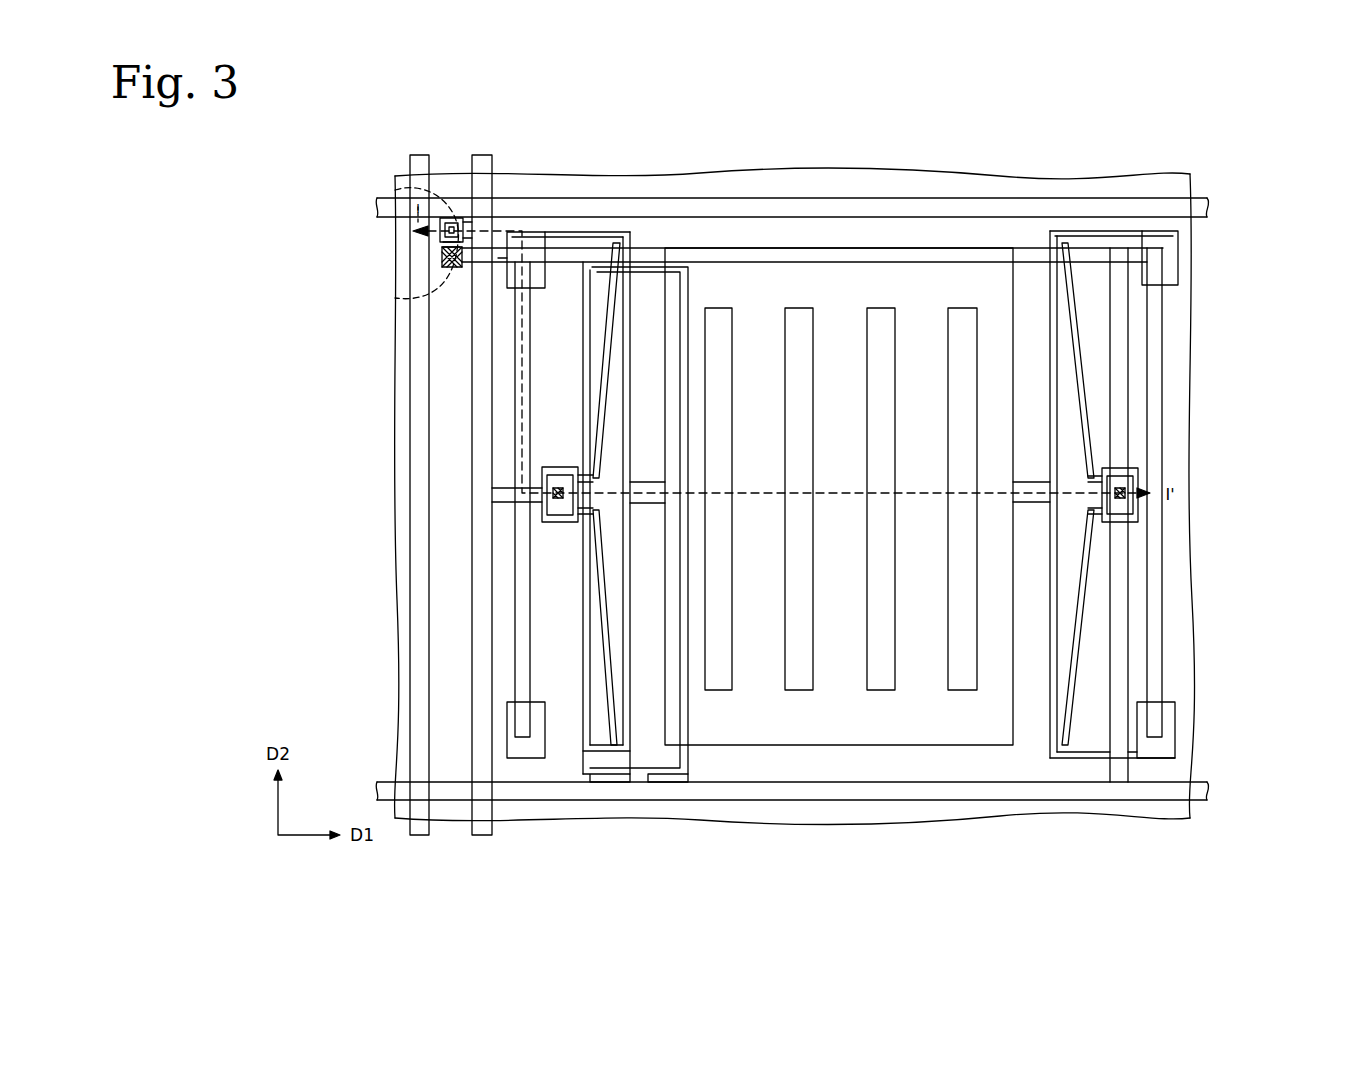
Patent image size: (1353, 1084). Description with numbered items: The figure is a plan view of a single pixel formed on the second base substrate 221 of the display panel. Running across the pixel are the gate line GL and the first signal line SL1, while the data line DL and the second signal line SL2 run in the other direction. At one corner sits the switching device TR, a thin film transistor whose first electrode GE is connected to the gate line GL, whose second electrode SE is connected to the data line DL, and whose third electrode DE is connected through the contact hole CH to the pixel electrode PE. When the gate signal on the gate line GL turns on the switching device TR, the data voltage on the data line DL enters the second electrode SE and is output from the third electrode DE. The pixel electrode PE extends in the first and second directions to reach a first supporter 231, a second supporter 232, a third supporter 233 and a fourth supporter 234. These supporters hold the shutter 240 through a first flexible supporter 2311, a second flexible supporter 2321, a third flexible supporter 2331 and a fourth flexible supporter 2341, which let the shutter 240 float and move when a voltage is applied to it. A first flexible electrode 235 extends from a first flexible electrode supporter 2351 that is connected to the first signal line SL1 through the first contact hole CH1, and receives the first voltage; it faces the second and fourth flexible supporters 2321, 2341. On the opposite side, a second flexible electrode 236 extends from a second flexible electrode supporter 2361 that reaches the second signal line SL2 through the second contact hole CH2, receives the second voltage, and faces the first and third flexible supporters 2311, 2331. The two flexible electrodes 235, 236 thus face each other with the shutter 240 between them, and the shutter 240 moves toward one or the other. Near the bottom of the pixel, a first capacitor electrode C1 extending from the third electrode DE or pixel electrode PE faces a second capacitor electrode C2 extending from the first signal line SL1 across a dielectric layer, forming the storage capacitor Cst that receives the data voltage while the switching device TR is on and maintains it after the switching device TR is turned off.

The second base substrate 221 is at (1180, 575).
The data line DL is at (423, 836).
The first signal line SL1 is at (1210, 790).
The second signal line SL2 is at (484, 836).
The gate line GL is at (1210, 207).
The switching device TR is at (326, 178).
The first electrode GE is at (402, 197).
The second electrode SE is at (440, 230).
The third electrode DE is at (442, 257).
The contact hole CH is at (452, 245).
The pixel electrode PE is at (498, 256).
The first supporter 231 is at (533, 240).
The first flexible supporter 2311 is at (620, 232).
The second flexible supporter 2321 is at (1090, 235).
The second supporter 232 is at (1175, 258).
The third supporter 233 is at (527, 746).
The third flexible supporter 2331 is at (590, 769).
The fourth supporter 234 is at (1157, 746).
The fourth flexible supporter 2341 is at (1070, 756).
The first flexible electrode 235 is at (1082, 600).
The first flexible electrode supporter 2351 is at (1138, 518).
The second flexible electrode 236 is at (603, 580).
The second flexible electrode supporter 2361 is at (570, 521).
The first contact hole CH1 is at (1132, 467).
The second contact hole CH2 is at (560, 470).
The first capacitor electrode C1 is at (612, 783).
The second capacitor electrode C2 is at (665, 783).
The storage capacitor Cst is at (652, 859).
The shutter 240 is at (856, 736).